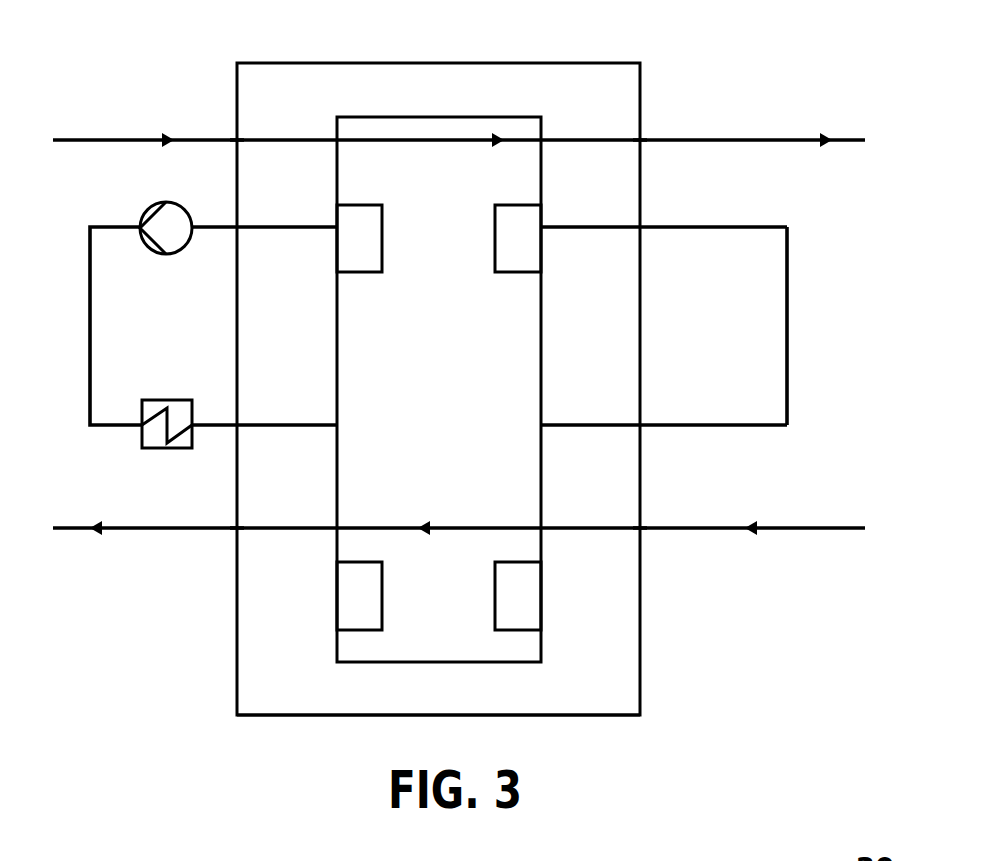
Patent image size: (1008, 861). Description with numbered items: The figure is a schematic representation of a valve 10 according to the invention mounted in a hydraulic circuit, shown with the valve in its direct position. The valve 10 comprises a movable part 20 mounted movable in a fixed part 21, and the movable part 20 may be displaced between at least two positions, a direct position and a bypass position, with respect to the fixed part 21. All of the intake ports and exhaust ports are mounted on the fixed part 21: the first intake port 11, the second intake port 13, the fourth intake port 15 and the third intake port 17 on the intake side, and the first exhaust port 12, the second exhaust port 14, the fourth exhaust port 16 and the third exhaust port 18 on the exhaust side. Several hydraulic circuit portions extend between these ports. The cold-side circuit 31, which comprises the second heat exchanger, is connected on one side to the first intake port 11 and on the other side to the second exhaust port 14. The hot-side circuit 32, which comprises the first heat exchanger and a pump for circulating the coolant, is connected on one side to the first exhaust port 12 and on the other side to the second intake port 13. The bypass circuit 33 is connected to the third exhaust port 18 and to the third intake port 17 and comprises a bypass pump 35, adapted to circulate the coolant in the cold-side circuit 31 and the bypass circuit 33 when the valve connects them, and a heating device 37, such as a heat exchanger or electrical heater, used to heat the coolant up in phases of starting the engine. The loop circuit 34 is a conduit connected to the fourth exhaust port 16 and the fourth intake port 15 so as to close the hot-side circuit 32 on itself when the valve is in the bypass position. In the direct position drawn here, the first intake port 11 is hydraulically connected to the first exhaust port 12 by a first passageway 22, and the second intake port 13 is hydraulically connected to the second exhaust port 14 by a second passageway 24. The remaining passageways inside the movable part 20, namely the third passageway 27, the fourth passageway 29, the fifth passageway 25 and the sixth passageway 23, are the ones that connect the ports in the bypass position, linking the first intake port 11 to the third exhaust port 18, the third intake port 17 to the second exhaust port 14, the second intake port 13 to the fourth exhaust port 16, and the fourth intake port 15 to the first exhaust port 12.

The valve 10 is at (630, 727).
The first intake port 11 is at (237, 140).
The first exhaust port 12 is at (640, 140).
The second intake port 13 is at (640, 528).
The second exhaust port 14 is at (237, 528).
The fourth intake port 15 is at (640, 227).
The fourth exhaust port 16 is at (640, 425).
The third intake port 17 is at (237, 425).
The third exhaust port 18 is at (237, 227).
The movable part 20 is at (443, 117).
The fixed part 21 is at (598, 78).
The first passageway 22 is at (410, 140).
The sixth passageway 23 is at (507, 272).
The second passageway 24 is at (398, 528).
The fifth passageway 25 is at (495, 597).
The third passageway 27 is at (362, 272).
The fourth passageway 29 is at (382, 595).
The cold-side circuit 31 is at (137, 138).
The hot-side circuit 32 is at (757, 140).
The bypass circuit 33 is at (90, 323).
The loop circuit 34 is at (787, 328).
The bypass pump 35 is at (147, 205).
The heating device 37 is at (142, 440).